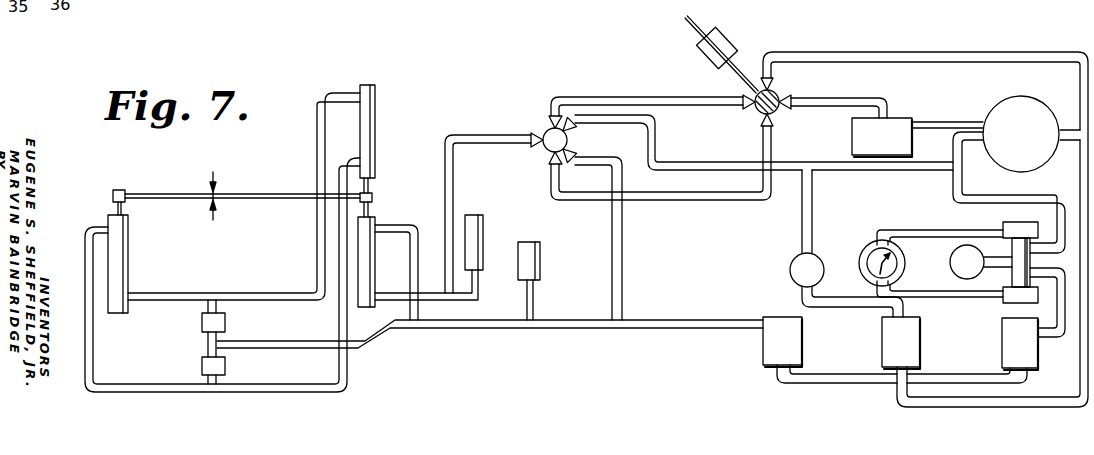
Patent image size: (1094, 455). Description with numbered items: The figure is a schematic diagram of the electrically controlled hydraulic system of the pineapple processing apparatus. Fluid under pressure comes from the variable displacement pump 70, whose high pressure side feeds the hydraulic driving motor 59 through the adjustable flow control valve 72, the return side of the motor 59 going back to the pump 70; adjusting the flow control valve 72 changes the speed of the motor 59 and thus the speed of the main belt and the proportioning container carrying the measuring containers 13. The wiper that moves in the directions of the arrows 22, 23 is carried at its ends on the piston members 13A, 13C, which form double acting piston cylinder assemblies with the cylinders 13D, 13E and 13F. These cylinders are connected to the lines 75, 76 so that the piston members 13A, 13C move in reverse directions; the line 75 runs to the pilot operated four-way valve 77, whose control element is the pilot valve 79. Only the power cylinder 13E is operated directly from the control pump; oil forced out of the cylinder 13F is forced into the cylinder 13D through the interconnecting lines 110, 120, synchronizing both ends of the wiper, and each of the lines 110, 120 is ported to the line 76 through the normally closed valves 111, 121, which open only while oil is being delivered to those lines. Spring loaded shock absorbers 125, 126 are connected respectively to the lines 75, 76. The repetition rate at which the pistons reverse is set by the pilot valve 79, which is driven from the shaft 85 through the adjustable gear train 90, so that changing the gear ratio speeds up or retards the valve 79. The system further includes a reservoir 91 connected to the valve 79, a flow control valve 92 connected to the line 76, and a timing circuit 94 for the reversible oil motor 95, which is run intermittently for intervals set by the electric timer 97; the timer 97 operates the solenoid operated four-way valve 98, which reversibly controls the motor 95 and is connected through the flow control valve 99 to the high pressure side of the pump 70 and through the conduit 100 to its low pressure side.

The measuring containers 13 is at (262, 193).
The piston member 13A is at (122, 208).
The piston member 13C is at (373, 208).
The cylinder 13D is at (125, 250).
The power cylinder 13E is at (368, 261).
The cylinder 13F is at (370, 118).
The arrow 22 is at (215, 180).
The arrow 23 is at (215, 210).
The hydraulic driving motor 59 is at (818, 259).
The variable displacement pump 70 is at (1035, 104).
The flow control valve 72 is at (882, 355).
The line (conduit) 75 is at (508, 135).
The line (conduit) 76 is at (477, 329).
The pilot operated four-way valve 77 is at (572, 140).
The pilot valve 79 is at (758, 114).
The shaft 85 is at (693, 22).
The adjustable gear train 90 is at (717, 42).
The reservoir 91 is at (903, 118).
The flow control valve 92 is at (773, 317).
The timing circuit 94 is at (929, 246).
The reversible oil motor 95 is at (951, 270).
The electric timer 97 is at (860, 266).
The solenoid operated four-way valve 98 is at (1017, 278).
The flow control valve 99 is at (1008, 357).
The conduit 100 is at (1062, 203).
The line 110 is at (166, 295).
The normally closed valve 111 is at (202, 322).
The line 120 is at (125, 386).
The normally closed valve 121 is at (202, 365).
The spring loaded shock absorber 125 is at (473, 260).
The spring loaded shock absorber 126 is at (541, 268).